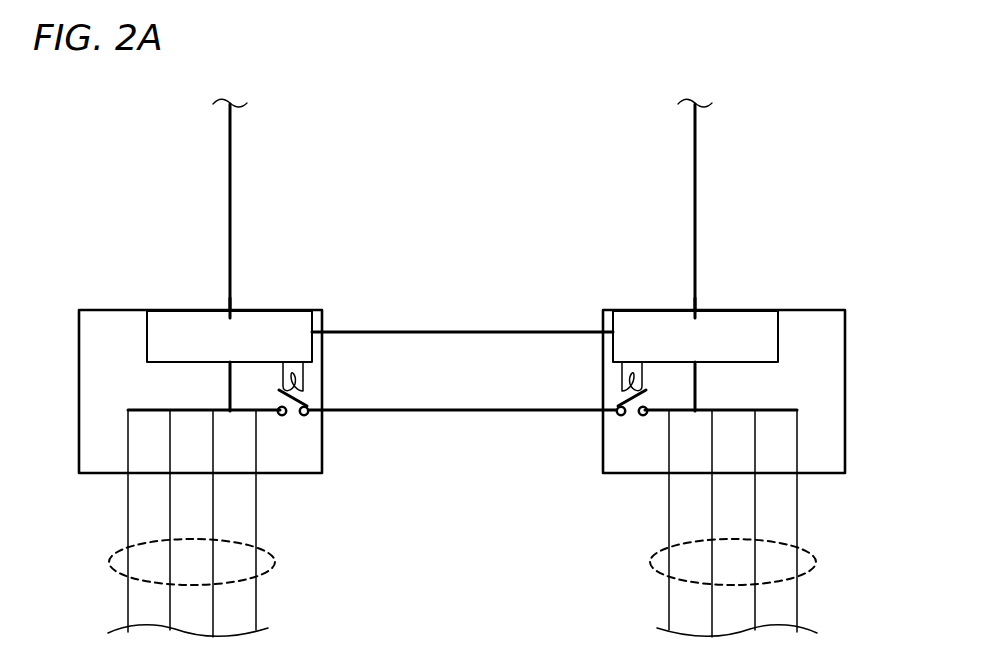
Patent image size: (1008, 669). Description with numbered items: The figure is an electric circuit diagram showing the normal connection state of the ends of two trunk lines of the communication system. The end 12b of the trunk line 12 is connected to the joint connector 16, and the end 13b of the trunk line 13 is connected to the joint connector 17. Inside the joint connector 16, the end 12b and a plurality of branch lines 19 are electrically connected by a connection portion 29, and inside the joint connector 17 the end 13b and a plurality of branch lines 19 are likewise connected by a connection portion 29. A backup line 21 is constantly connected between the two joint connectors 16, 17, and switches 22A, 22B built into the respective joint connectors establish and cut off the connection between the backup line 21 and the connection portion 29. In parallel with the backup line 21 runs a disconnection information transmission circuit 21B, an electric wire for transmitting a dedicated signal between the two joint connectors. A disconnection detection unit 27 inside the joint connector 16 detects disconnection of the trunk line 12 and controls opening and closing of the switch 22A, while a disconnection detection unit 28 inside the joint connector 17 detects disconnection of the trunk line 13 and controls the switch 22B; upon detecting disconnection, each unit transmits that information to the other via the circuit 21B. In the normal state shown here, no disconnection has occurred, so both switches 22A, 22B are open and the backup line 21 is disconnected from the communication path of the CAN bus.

The trunk line 12 is at (697, 188).
The trunk line 13 is at (228, 188).
The end of the trunk line 12b is at (701, 307).
The end of the trunk line 13b is at (224, 307).
The joint connector 16 is at (814, 310).
The joint connector 17 is at (110, 310).
The branch lines 19 is at (108, 562).
The backup line 21 is at (462, 411).
The disconnection information transmission circuit 21B is at (462, 331).
The switch 22A is at (631, 420).
The switch 22B is at (294, 420).
The disconnection detection unit 27 is at (778, 330).
The disconnection detection unit 28 is at (147, 330).
The connection portion 29 is at (228, 388).